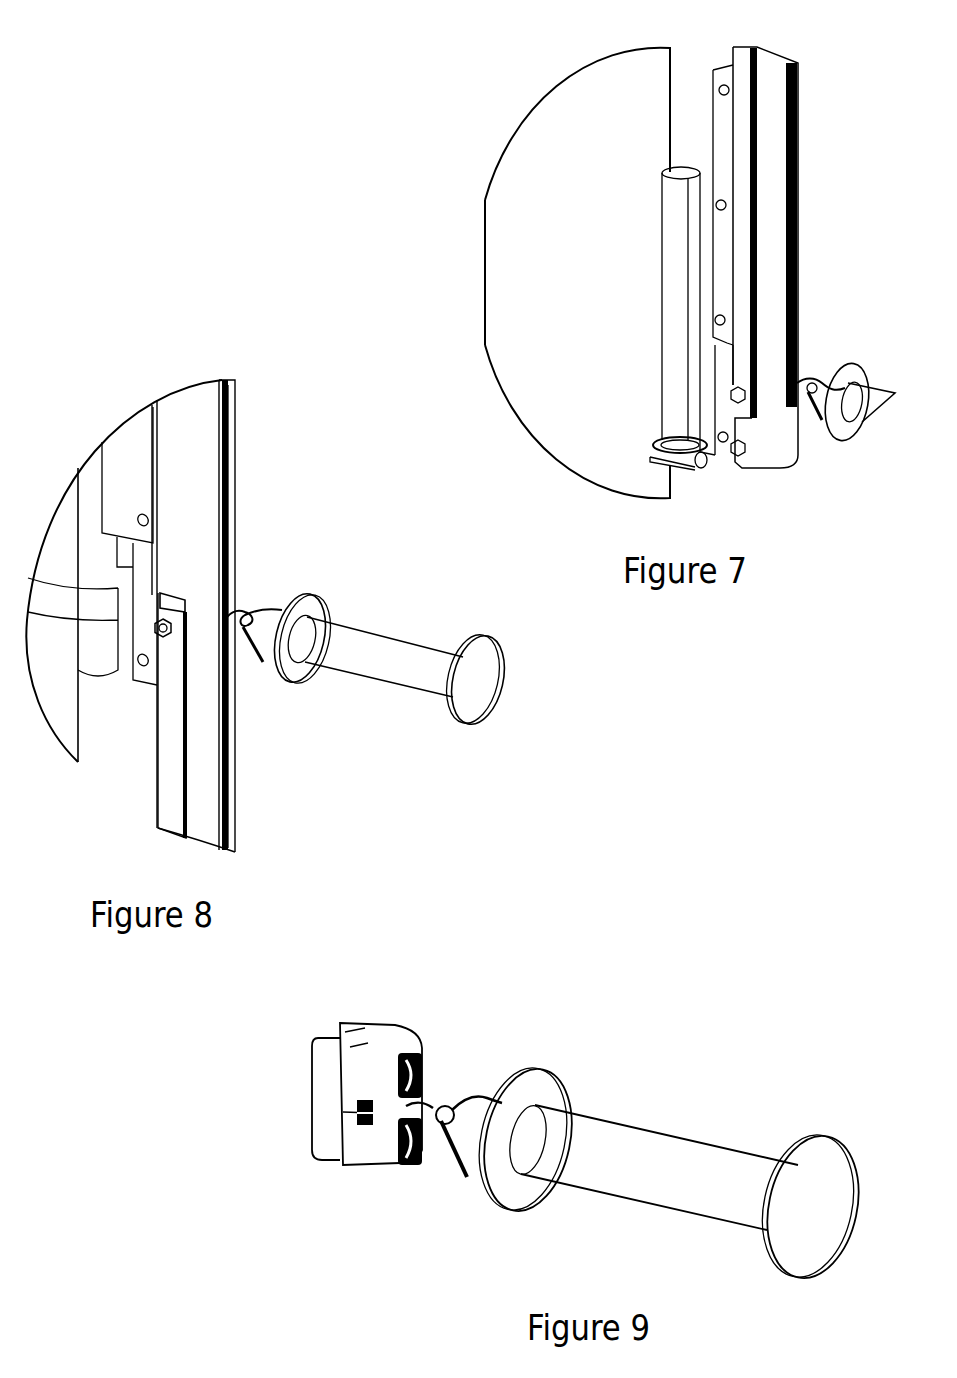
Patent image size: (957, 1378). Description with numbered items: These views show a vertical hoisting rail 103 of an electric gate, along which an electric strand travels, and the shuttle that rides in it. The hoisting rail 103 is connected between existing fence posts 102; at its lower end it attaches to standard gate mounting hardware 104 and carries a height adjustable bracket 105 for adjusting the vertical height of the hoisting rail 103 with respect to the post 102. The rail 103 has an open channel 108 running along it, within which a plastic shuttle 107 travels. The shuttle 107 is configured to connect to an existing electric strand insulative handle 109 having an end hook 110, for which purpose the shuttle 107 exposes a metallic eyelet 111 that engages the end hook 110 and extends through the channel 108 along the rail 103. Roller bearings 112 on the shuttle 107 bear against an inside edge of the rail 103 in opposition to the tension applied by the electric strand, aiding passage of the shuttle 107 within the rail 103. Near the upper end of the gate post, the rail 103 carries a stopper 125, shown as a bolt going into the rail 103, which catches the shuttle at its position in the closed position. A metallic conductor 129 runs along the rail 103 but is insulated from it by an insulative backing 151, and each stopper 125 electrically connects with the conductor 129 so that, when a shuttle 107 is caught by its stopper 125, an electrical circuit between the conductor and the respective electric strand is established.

In FIG. 7, the fence post 102 is at (578, 105).
In FIG. 8, the fence post 102 is at (53, 707).
In FIG. 7, the hoisting rail 103 is at (770, 80).
In FIG. 8, the hoisting rail 103 is at (196, 405).
In FIG. 7, the gate mounting hardware 104 is at (705, 462).
In FIG. 7, the height adjustable bracket 105 is at (702, 300).
In FIG. 9, the shuttle 107 is at (412, 1016).
In FIG. 8, the open channel 108 is at (230, 493).
In FIG. 8, the electric strand insulative handle 109 is at (410, 620).
In FIG. 9, the electric strand insulative handle 109 is at (683, 1121).
In FIG. 9, the end hook 110 is at (463, 1177).
In FIG. 8, the metallic eyelet 111 is at (238, 612).
In FIG. 9, the metallic eyelet 111 is at (417, 1107).
In FIG. 9, the roller bearings 112 is at (420, 1058).
In FIG. 8, the stopper 125 is at (163, 640).
In FIG. 8, the metallic conductor 129 is at (168, 800).
In FIG. 8, the insulative backing 151 is at (172, 597).